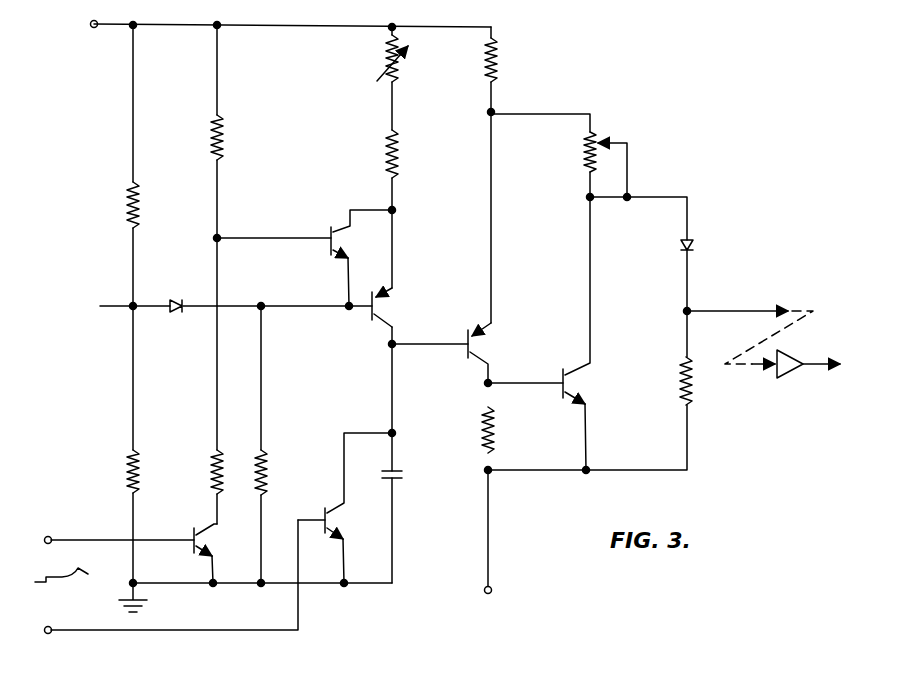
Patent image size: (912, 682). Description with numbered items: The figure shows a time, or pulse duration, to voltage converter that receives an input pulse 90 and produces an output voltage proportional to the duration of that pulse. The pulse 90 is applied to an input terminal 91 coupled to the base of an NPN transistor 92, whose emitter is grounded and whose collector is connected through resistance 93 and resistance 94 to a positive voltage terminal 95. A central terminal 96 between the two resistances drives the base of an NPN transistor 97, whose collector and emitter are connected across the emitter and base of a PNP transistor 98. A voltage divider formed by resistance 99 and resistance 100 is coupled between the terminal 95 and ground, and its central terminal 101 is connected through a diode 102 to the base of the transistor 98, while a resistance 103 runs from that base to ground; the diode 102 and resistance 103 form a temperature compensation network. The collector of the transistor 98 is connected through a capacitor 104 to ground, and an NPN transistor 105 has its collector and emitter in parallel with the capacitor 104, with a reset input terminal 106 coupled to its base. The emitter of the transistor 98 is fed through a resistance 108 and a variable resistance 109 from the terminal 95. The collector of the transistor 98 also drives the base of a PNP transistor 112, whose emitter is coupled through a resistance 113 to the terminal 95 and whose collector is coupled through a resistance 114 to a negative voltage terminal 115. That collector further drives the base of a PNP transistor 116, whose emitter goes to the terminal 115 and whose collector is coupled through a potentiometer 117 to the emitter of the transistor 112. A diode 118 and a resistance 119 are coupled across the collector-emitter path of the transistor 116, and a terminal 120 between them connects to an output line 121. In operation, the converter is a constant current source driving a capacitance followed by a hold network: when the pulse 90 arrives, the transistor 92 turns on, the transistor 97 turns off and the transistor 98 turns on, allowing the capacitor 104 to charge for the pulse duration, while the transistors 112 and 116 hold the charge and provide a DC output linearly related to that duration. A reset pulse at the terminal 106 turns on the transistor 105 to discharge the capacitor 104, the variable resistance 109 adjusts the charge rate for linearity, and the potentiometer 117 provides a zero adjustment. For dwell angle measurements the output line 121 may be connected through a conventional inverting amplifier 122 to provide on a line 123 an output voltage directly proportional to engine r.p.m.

The input pulse 90 is at (77, 579).
The input terminal 91 is at (50, 544).
The NPN transistor 92 is at (192, 530).
The resistance 93 is at (211, 474).
The resistance 94 is at (211, 128).
The positive voltage terminal 95 is at (94, 28).
The central terminal 96 is at (213, 239).
The NPN transistor 97 is at (329, 228).
The PNP transistor 98 is at (370, 318).
The resistance 99 is at (127, 204).
The resistance 100 is at (127, 460).
The central terminal 101 is at (208, 304).
The diode 102 is at (186, 296).
The resistance 103 is at (267, 480).
The capacitor 104 is at (402, 470).
The NPN transistor 105 is at (323, 511).
The reset input terminal 106 is at (50, 634).
The resistance 108 is at (398, 157).
The variable resistance 109 is at (396, 78).
The PNP transistor 112 is at (466, 331).
The resistance 113 is at (497, 75).
The resistance 114 is at (494, 438).
The negative voltage terminal 115 is at (491, 585).
The PNP transistor 116 is at (562, 371).
The potentiometer 117 is at (584, 160).
The diode 118 is at (692, 243).
The resistance 119 is at (690, 399).
The terminal 120 is at (683, 311).
The output line 121 is at (735, 308).
The inverting amplifier 122 is at (785, 379).
The output line 123 is at (823, 366).